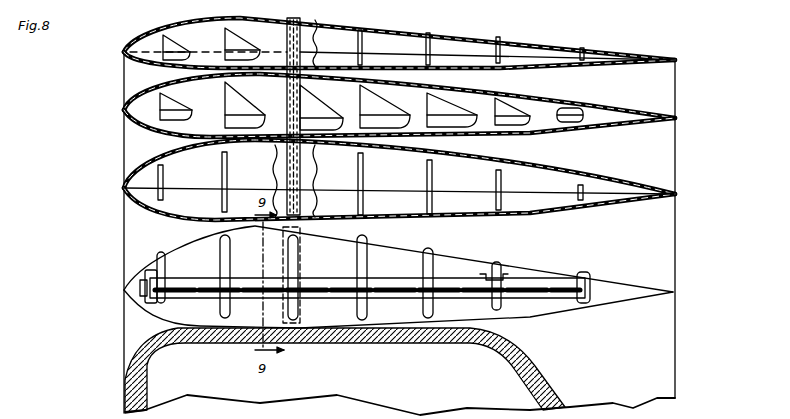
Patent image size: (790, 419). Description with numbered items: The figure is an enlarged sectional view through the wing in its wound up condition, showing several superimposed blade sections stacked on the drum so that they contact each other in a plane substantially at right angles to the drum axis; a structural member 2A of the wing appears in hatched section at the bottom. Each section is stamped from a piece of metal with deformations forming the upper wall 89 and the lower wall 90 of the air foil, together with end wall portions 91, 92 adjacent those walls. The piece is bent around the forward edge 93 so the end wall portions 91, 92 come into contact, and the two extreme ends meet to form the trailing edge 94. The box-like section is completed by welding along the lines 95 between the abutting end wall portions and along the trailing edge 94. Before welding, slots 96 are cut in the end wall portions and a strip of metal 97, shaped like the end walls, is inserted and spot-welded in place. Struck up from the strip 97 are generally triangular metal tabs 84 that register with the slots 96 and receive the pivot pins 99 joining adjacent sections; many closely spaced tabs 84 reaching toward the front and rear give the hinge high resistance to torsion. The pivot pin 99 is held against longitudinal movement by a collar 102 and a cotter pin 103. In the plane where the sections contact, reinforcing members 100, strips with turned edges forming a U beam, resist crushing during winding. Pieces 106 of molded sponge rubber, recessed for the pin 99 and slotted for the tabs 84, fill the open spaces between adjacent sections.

The wing structure 2A is at (150, 350).
The metal tabs 84 is at (230, 265).
The upper wall 89 is at (445, 30).
The lower wall 90 is at (475, 67).
The end wall portion 91 is at (338, 32).
The end wall portion 92 is at (375, 58).
The forward edge 93 is at (124, 53).
The trailing edge 94 is at (675, 60).
The welding lines 95 is at (398, 58).
The slots 96 is at (500, 48).
The strip of metal 97 is at (197, 30).
The pivot pins 99 is at (306, 290).
The reinforcing members 100 is at (300, 20).
The collar 102 is at (150, 283).
The cotter pin 103 is at (148, 295).
The pieces of molded sponge rubber 106 is at (470, 262).